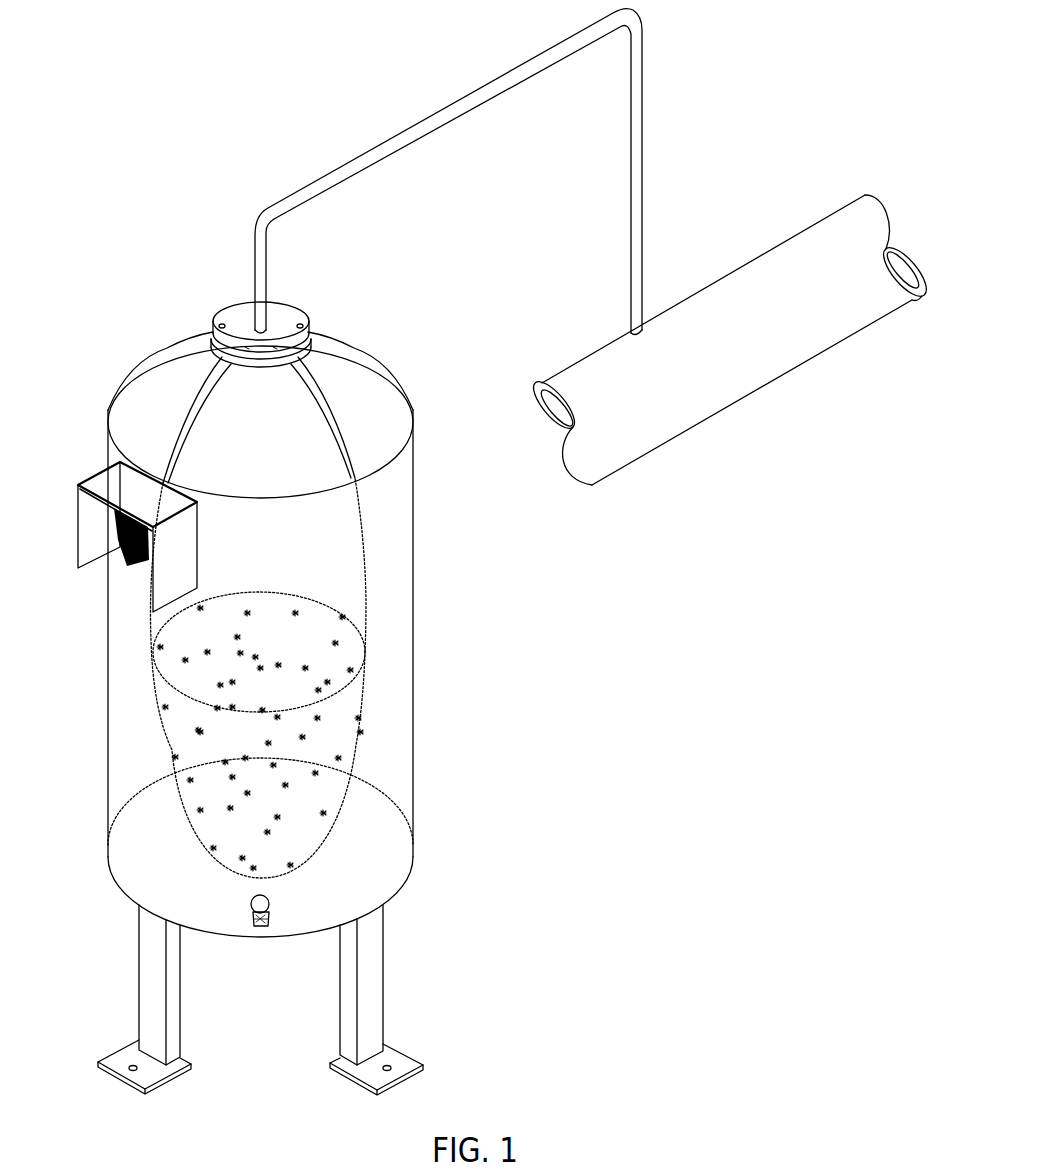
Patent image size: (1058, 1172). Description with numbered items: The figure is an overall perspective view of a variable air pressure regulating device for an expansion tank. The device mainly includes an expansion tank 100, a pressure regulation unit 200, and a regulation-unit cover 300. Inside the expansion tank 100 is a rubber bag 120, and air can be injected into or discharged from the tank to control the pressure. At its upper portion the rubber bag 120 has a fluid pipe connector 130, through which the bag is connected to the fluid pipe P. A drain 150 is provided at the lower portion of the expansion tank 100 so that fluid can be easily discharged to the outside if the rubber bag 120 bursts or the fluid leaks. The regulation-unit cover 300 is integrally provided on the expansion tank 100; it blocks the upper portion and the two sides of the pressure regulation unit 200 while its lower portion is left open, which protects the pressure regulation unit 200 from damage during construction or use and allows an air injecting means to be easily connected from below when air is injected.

The expansion tank 100 is at (403, 637).
The rubber bag 120 is at (367, 543).
The fluid pipe connector 130 is at (253, 318).
The drain 150 is at (273, 923).
The pressure regulation unit 200 is at (118, 593).
The regulation-unit cover 300 is at (92, 470).
The fluid pipe P is at (746, 277).